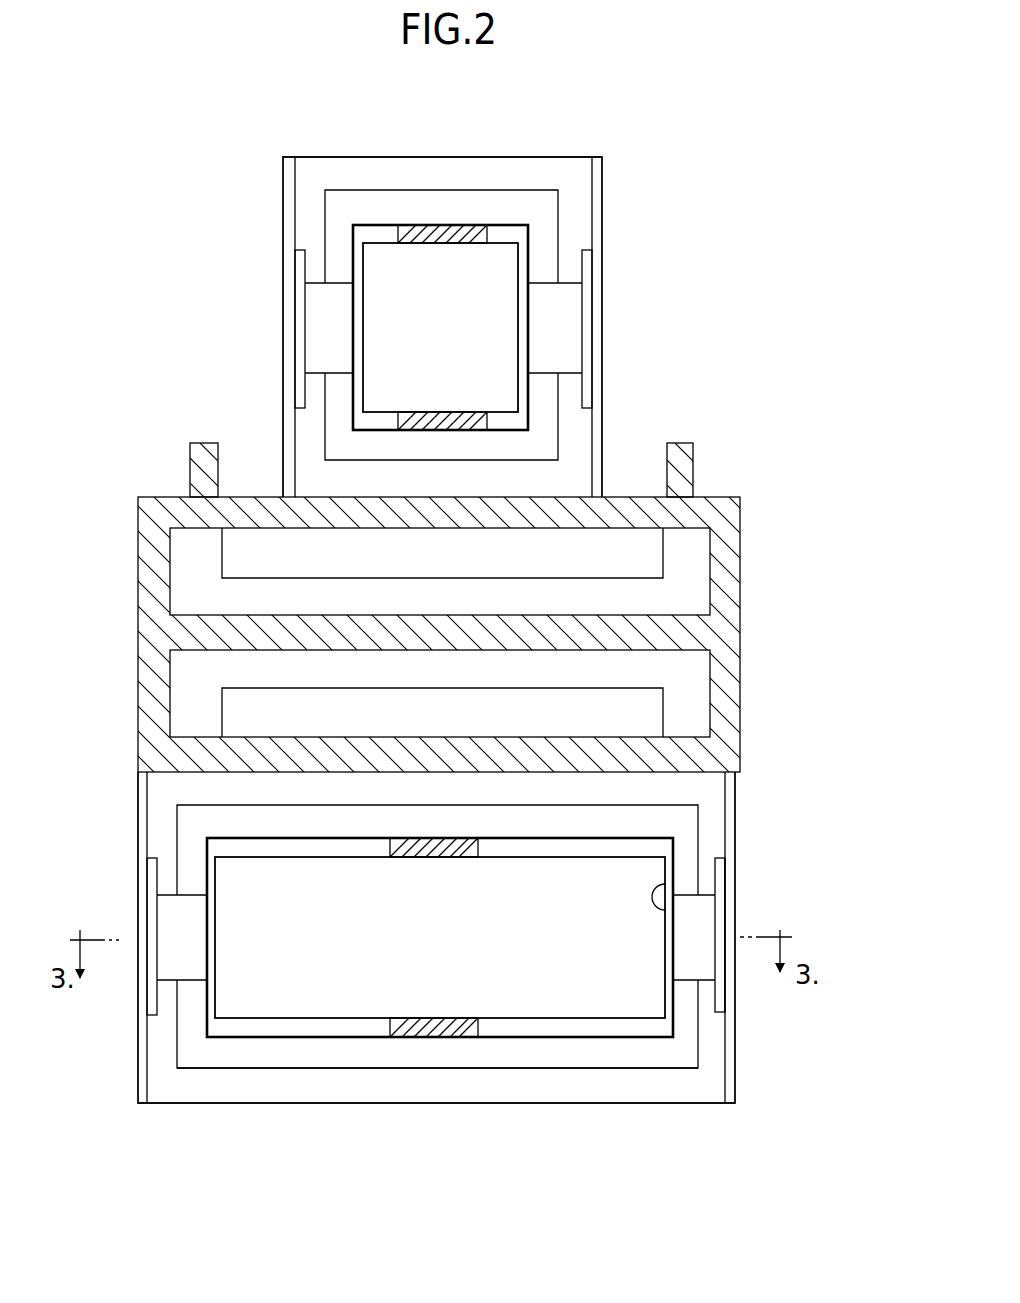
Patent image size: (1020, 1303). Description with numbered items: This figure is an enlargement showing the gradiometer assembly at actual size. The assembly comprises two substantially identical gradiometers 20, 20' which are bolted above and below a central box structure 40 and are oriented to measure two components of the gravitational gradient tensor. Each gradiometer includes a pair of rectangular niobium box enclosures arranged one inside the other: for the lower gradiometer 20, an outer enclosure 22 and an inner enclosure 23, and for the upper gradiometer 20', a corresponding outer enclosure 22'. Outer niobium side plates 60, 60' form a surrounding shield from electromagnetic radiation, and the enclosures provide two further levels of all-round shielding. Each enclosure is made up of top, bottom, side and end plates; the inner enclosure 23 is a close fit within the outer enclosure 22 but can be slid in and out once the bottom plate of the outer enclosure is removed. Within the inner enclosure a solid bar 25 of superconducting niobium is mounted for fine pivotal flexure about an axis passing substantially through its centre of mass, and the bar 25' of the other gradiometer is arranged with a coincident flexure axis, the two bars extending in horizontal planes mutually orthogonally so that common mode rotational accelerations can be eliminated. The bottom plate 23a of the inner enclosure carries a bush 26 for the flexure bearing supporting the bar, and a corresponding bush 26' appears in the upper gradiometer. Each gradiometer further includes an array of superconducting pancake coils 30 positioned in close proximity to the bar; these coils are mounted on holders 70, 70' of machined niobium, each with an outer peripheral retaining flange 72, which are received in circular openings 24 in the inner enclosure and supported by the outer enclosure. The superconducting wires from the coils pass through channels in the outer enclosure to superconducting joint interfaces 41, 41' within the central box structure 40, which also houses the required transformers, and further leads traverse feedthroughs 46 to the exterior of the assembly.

The gradiometer 20 is at (505, 937).
The gradiometer 20' is at (545, 327).
The outer enclosure 22 is at (436, 960).
The outer enclosure 22' is at (442, 297).
The inner enclosure 23 is at (260, 1072).
The bottom plate 23a is at (645, 1052).
The circular openings 24 is at (683, 982).
The solid bar 25 is at (440, 993).
The solid bar 25' is at (376, 327).
The bush 26 is at (461, 993).
The bush 26' is at (436, 263).
The superconducting coils 30 is at (660, 892).
The central box structure 40 is at (750, 632).
The superconducting joint interface 41 is at (517, 704).
The superconducting joint interface 41' is at (516, 542).
The feedthroughs 46 is at (694, 460).
The outer niobium side plates 60 is at (477, 986).
The outer niobium side plates 60' is at (490, 292).
The holder 70 is at (783, 965).
The holder 70' is at (634, 329).
The retaining flange 72 is at (723, 877).